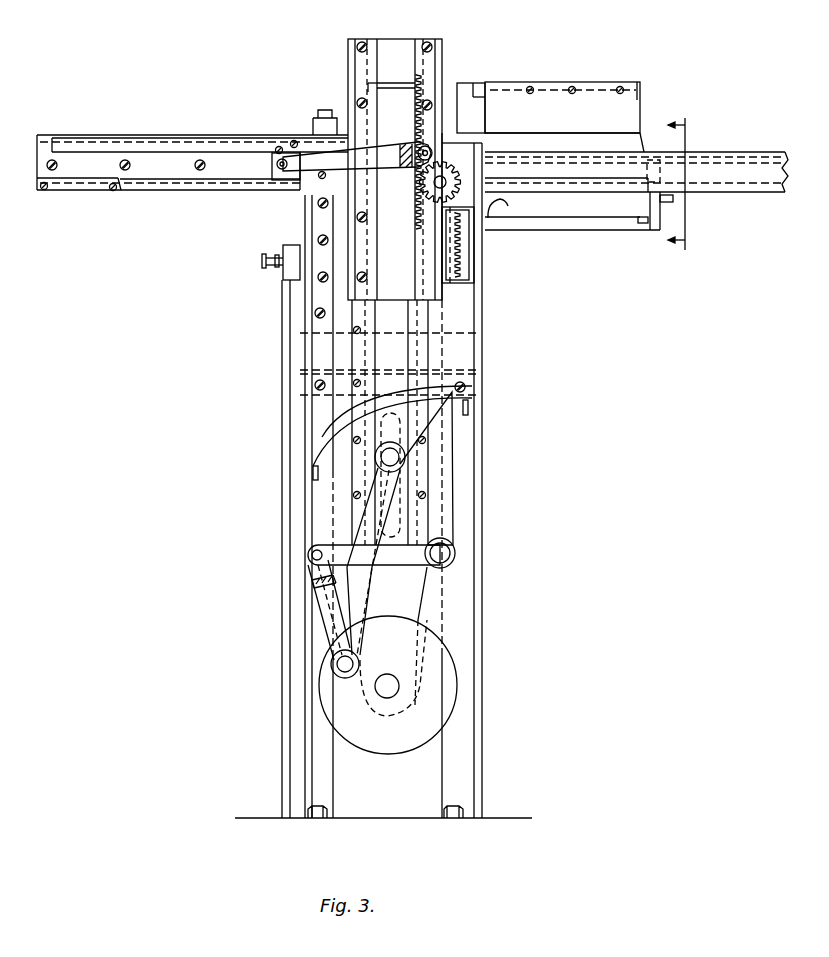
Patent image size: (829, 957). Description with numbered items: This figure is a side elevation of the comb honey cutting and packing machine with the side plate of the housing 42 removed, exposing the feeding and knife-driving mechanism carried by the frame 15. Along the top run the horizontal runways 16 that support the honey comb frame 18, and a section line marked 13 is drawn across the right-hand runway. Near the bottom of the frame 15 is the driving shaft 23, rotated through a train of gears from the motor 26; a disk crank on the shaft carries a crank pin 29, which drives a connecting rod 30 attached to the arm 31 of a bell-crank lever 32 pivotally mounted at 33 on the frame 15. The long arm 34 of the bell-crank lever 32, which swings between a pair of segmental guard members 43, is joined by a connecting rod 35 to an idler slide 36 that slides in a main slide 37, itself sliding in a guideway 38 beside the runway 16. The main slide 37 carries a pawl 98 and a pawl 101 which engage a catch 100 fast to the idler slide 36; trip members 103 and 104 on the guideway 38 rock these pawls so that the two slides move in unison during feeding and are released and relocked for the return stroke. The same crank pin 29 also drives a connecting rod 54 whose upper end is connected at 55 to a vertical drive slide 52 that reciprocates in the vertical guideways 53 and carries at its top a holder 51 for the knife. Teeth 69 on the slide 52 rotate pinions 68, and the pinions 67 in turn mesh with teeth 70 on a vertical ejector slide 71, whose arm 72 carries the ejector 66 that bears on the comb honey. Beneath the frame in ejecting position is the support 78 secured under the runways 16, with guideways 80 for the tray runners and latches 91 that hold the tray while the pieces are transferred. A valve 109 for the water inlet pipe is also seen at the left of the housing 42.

The section line 13- 13 is at (690, 182).
The frame 15 is at (482, 425).
The horizontal runways 16 is at (708, 182).
The honey comb frame 18 is at (663, 170).
The driving shaft 23 is at (392, 688).
The motor 26 is at (396, 740).
The crank pin 29 is at (342, 665).
The connecting rod 30 is at (325, 600).
The arm 31 is at (338, 548).
The bell-crank lever 32 is at (452, 556).
The pivot 33 is at (450, 548).
The arm 34 is at (438, 472).
The connecting rod 35 is at (397, 165).
The idler slide 36 is at (276, 172).
The main slide 37 is at (280, 166).
The guideway 38 is at (165, 180).
The housing 42 is at (481, 628).
The segmental guard members 43 is at (320, 440).
The holders 51 is at (393, 83).
The vertical drive slides 52 is at (383, 295).
The vertical guideways 53 is at (355, 350).
The connecting rods 54 is at (372, 588).
The upper end connection 55 is at (405, 457).
The ejector 66 is at (628, 140).
The pinion 67 is at (443, 180).
The pinion 68 is at (444, 188).
The teeth 69 is at (428, 118).
The teeth 70 is at (462, 262).
The vertical ejector slides 71 is at (470, 100).
The arm 72 is at (497, 82).
The support 78 is at (569, 230).
The guideways 80 is at (522, 230).
The latches 91 is at (500, 215).
The pawl 98 is at (277, 146).
The catch 100 is at (282, 170).
The pawl 101 is at (320, 178).
The trip member 103 is at (292, 140).
The trip member 104 is at (102, 184).
The valve 109 is at (262, 262).